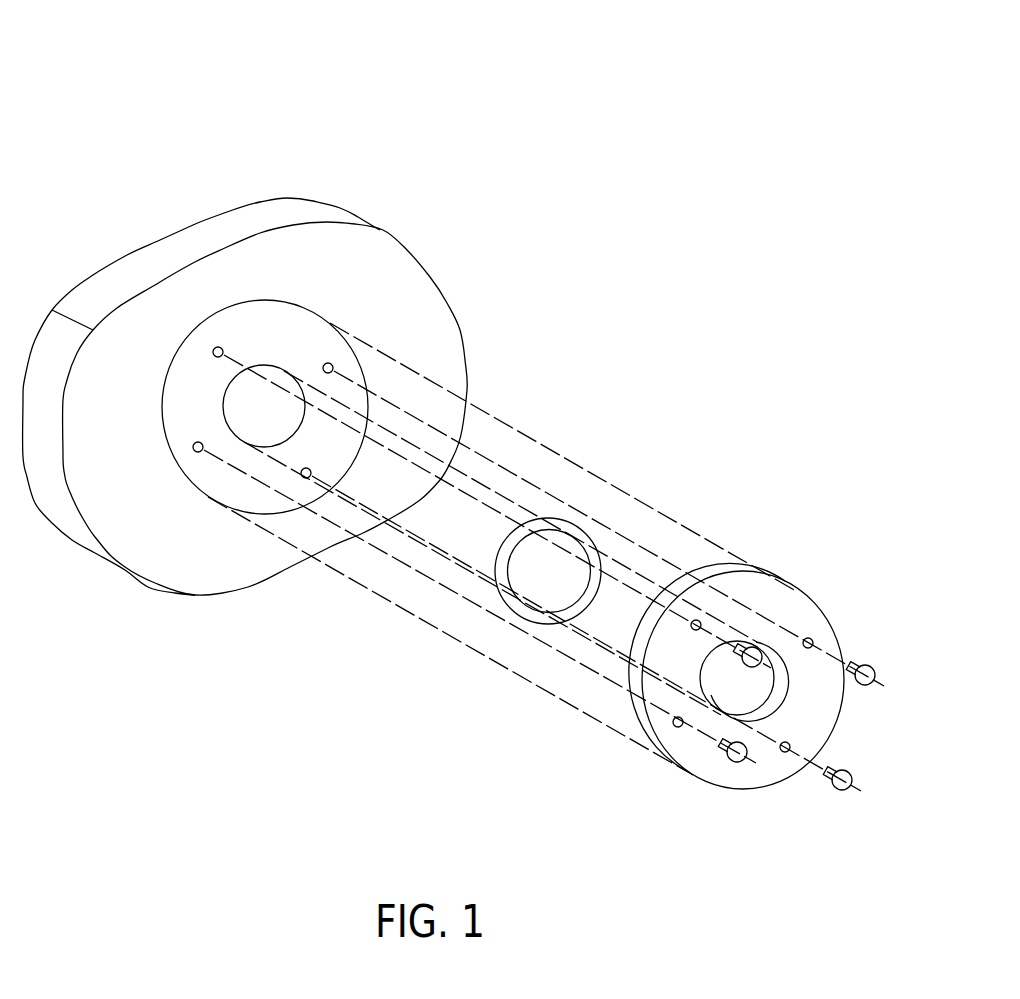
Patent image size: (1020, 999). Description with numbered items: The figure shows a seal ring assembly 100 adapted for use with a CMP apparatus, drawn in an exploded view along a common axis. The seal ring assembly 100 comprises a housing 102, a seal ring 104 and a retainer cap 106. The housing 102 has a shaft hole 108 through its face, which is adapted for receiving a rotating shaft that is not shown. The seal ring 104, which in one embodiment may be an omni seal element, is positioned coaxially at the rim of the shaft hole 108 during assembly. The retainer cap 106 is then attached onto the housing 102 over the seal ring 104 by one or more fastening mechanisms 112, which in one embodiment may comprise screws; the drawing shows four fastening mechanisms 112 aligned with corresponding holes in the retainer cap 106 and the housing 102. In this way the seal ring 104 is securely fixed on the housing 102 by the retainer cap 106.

The seal ring assembly 100 is at (521, 125).
The housing 102 is at (207, 247).
The seal ring 104 is at (513, 538).
The retainer cap 106 is at (823, 608).
The shaft hole 108 is at (226, 400).
The fastening mechanism 112 is at (760, 645).